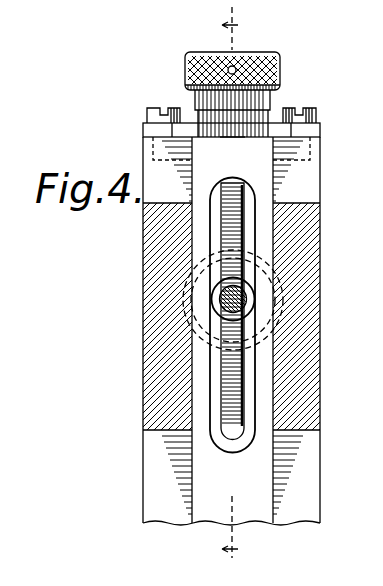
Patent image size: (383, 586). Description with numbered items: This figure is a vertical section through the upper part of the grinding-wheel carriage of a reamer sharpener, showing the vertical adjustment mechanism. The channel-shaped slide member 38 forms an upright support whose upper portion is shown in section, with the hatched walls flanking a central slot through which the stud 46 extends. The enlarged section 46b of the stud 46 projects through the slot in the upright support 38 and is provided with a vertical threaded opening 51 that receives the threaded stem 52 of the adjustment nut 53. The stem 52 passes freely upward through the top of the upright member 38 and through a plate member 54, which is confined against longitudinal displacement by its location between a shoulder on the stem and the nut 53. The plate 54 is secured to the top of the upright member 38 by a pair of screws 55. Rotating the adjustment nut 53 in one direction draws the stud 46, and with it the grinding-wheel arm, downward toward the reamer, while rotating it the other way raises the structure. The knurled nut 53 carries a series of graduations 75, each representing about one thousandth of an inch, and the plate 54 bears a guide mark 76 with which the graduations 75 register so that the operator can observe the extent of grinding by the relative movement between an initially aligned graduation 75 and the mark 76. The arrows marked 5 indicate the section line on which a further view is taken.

The section line 5— 5 is at (236, 281).
The channel-shaped slide member 38 is at (318, 488).
The stud 46 is at (246, 293).
The enlarged stud section 46b is at (240, 297).
The vertical threaded opening 51 is at (190, 281).
The threaded stem 52 is at (240, 226).
The adjustment nut 53 is at (282, 55).
The plate member 54 is at (320, 128).
The screws 55 is at (150, 113).
The graduations 75 is at (198, 118).
The guide mark 76 is at (232, 126).